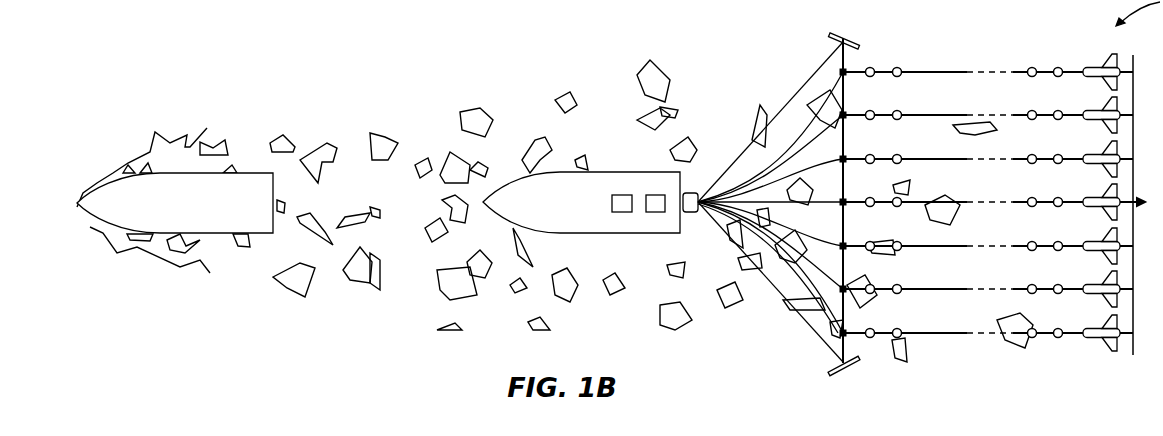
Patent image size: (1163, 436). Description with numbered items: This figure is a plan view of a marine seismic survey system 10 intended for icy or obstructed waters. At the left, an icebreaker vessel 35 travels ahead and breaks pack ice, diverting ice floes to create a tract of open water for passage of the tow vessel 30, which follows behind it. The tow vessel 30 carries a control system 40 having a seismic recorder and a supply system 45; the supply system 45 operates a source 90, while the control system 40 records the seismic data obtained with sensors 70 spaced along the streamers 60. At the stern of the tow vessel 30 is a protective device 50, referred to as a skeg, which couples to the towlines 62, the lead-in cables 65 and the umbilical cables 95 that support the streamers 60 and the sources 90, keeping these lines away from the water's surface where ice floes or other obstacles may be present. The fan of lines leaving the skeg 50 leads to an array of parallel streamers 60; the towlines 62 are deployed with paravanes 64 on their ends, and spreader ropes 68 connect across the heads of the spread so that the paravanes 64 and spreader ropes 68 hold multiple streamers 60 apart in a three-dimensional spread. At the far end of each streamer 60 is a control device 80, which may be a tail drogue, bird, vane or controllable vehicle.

The marine seismic survey system 10 is at (198, 60).
The icebreaker vessel 35 is at (161, 216).
The tow vessel 30 is at (536, 215).
The control system 40 is at (622, 213).
The supply system 45 is at (655, 194).
The protective device (skeg) 50 is at (690, 214).
The streamer 60 is at (938, 70).
The towline 62 is at (833, 40).
The paravane 64 is at (858, 44).
The lead-in cable 65 is at (827, 70).
The spreader rope 68 is at (857, 113).
The sensor 70 is at (1030, 67).
The control device 80 is at (1095, 65).
The source 90 is at (785, 200).
The umbilical cable 95 is at (730, 200).